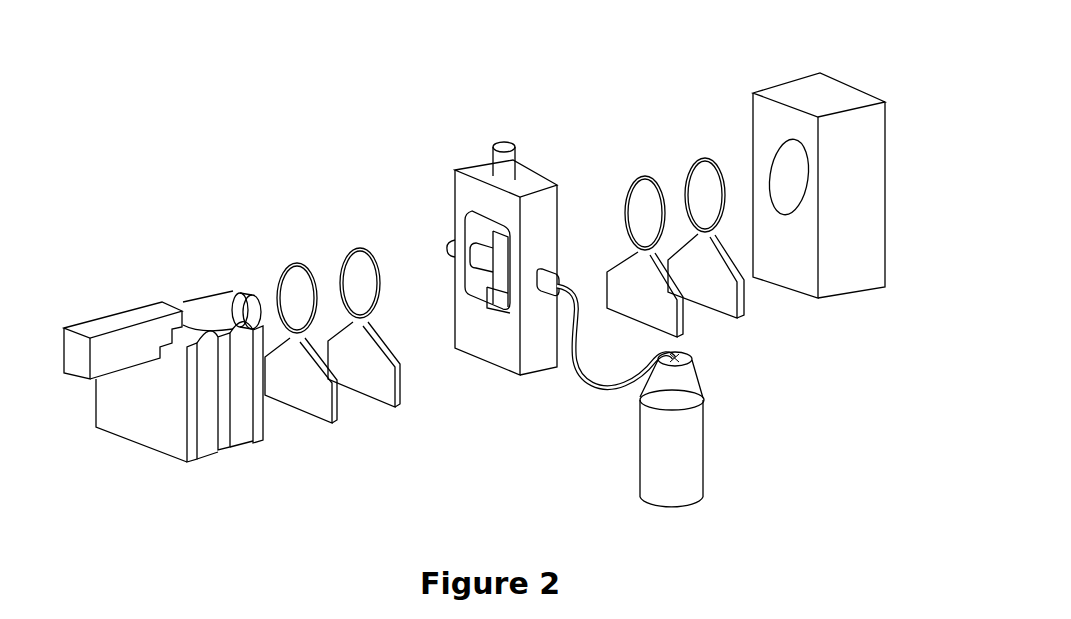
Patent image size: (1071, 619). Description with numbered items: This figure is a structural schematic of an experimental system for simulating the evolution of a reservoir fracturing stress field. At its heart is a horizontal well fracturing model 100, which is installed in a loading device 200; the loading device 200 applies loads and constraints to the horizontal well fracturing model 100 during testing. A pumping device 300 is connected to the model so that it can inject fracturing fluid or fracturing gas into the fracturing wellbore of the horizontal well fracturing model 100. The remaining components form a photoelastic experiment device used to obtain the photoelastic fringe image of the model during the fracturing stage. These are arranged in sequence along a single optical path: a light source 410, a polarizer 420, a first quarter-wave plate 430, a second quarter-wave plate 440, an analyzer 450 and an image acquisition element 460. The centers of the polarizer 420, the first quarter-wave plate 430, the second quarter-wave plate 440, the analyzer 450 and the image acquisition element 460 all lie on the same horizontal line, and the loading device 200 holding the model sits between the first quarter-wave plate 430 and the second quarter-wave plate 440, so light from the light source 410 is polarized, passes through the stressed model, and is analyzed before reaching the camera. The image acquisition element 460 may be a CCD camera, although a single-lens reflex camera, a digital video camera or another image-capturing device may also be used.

The horizontal well fracturing model 100 is at (500, 270).
The loading device 200 is at (537, 322).
The pumping device 300 is at (687, 470).
The light source 410 is at (805, 240).
The polarizer 420 is at (705, 197).
The first quarter-wave plate 430 is at (645, 213).
The second quarter-wave plate 440 is at (360, 300).
The analyzer 450 is at (300, 315).
The image acquisition element 460 is at (117, 353).